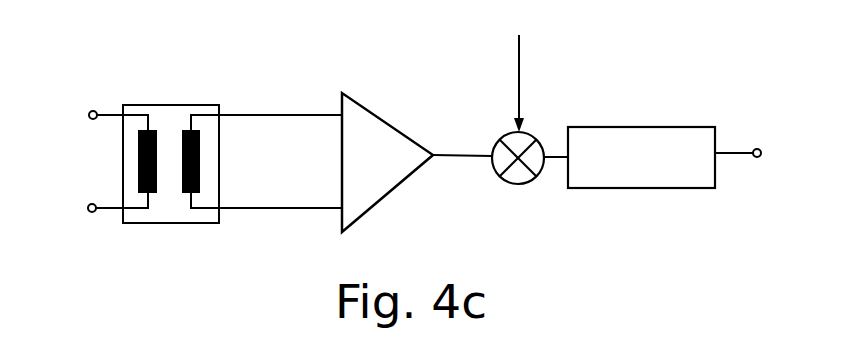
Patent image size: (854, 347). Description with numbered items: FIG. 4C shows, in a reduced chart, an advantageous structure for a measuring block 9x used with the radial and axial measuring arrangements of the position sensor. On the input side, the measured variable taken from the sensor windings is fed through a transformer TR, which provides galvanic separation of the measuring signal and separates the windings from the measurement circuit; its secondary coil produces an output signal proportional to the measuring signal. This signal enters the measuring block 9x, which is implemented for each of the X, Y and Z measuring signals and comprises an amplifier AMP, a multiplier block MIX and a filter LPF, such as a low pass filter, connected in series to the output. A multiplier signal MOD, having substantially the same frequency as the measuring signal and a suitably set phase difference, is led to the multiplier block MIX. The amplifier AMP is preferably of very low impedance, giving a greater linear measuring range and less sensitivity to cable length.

The measuring block 9x is at (589, 276).
The transformer TR is at (170, 105).
The amplifier AMP is at (370, 113).
The multiplier block MIX is at (518, 184).
The multiplier signal MOD is at (529, 67).
The filter LPF is at (642, 127).